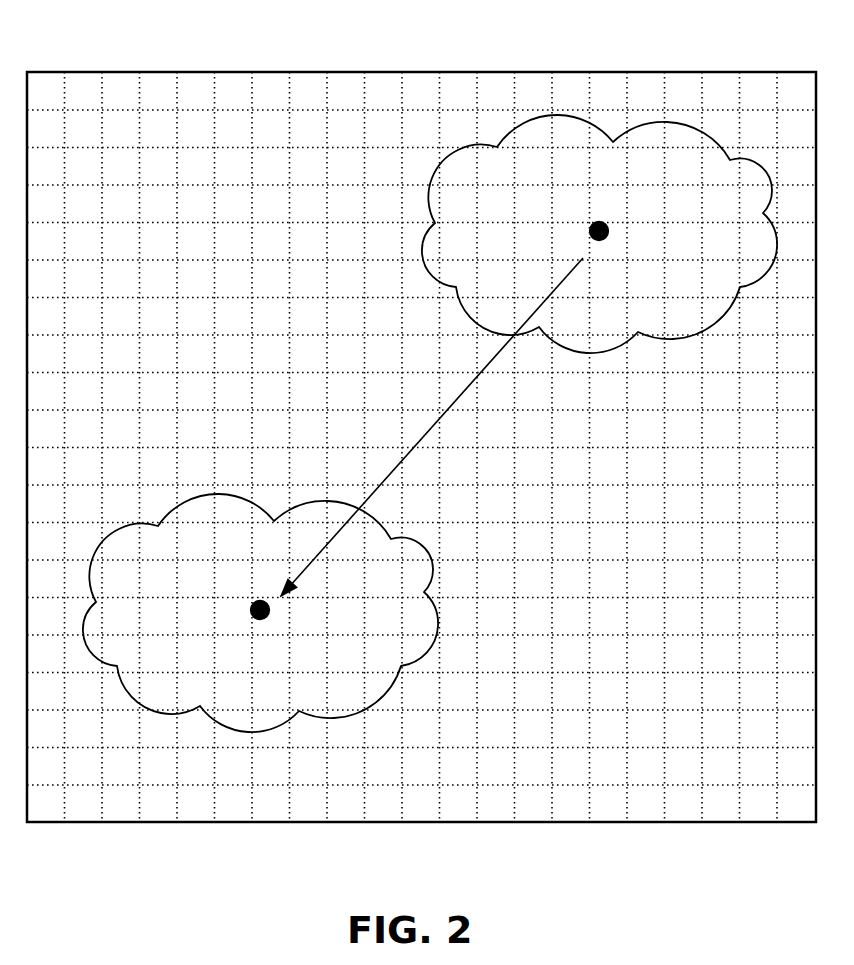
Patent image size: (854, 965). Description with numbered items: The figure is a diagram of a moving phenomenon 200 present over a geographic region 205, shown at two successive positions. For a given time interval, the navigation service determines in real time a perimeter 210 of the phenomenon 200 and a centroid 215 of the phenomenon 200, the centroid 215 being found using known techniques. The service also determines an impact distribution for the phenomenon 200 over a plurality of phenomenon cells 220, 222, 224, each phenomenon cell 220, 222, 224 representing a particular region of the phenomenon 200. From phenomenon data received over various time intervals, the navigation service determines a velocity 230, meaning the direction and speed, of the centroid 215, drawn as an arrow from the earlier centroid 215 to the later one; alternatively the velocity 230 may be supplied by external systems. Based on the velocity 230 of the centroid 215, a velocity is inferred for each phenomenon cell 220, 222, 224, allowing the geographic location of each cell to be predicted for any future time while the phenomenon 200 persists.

The phenomenon 200 is at (408, 183).
The geographic region 205 is at (430, 165).
The perimeter 210 is at (558, 115).
The centroid 215 is at (599, 231).
The phenomenon cell 220 is at (609, 166).
The phenomenon cell 222 is at (650, 169).
The phenomenon cell 224 is at (683, 165).
The velocity 230 is at (476, 380).